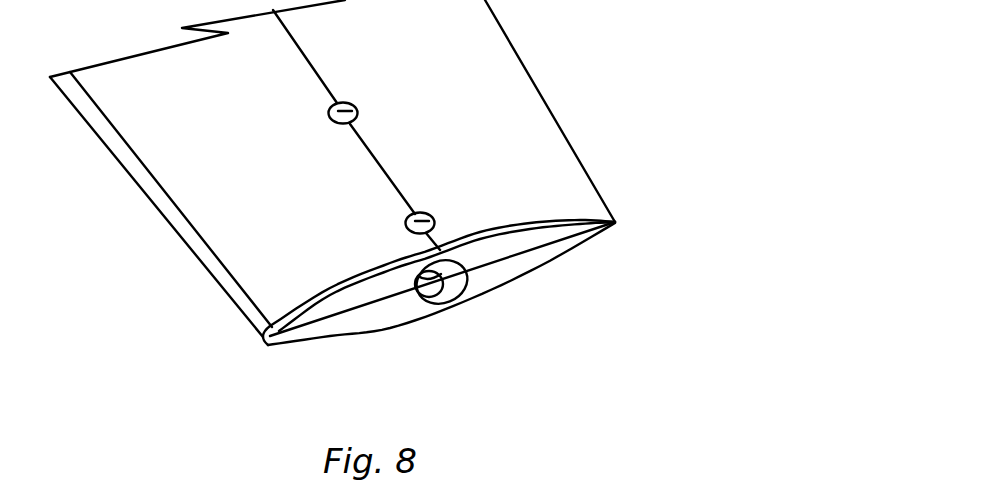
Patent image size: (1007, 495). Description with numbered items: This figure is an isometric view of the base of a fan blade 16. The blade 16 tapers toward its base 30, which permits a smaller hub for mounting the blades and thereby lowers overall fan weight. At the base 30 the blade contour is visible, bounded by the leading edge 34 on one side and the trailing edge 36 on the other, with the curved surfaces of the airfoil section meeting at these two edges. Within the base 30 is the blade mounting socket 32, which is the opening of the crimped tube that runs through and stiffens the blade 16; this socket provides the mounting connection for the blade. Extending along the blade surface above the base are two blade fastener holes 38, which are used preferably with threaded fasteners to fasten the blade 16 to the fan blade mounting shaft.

The fan blade 16 is at (548, 53).
The blade base 30 is at (515, 267).
The blade mounting socket 32 is at (443, 291).
The leading edge 34 is at (265, 338).
The trailing edge 36 is at (615, 222).
The blade fastener holes 38 is at (357, 112).